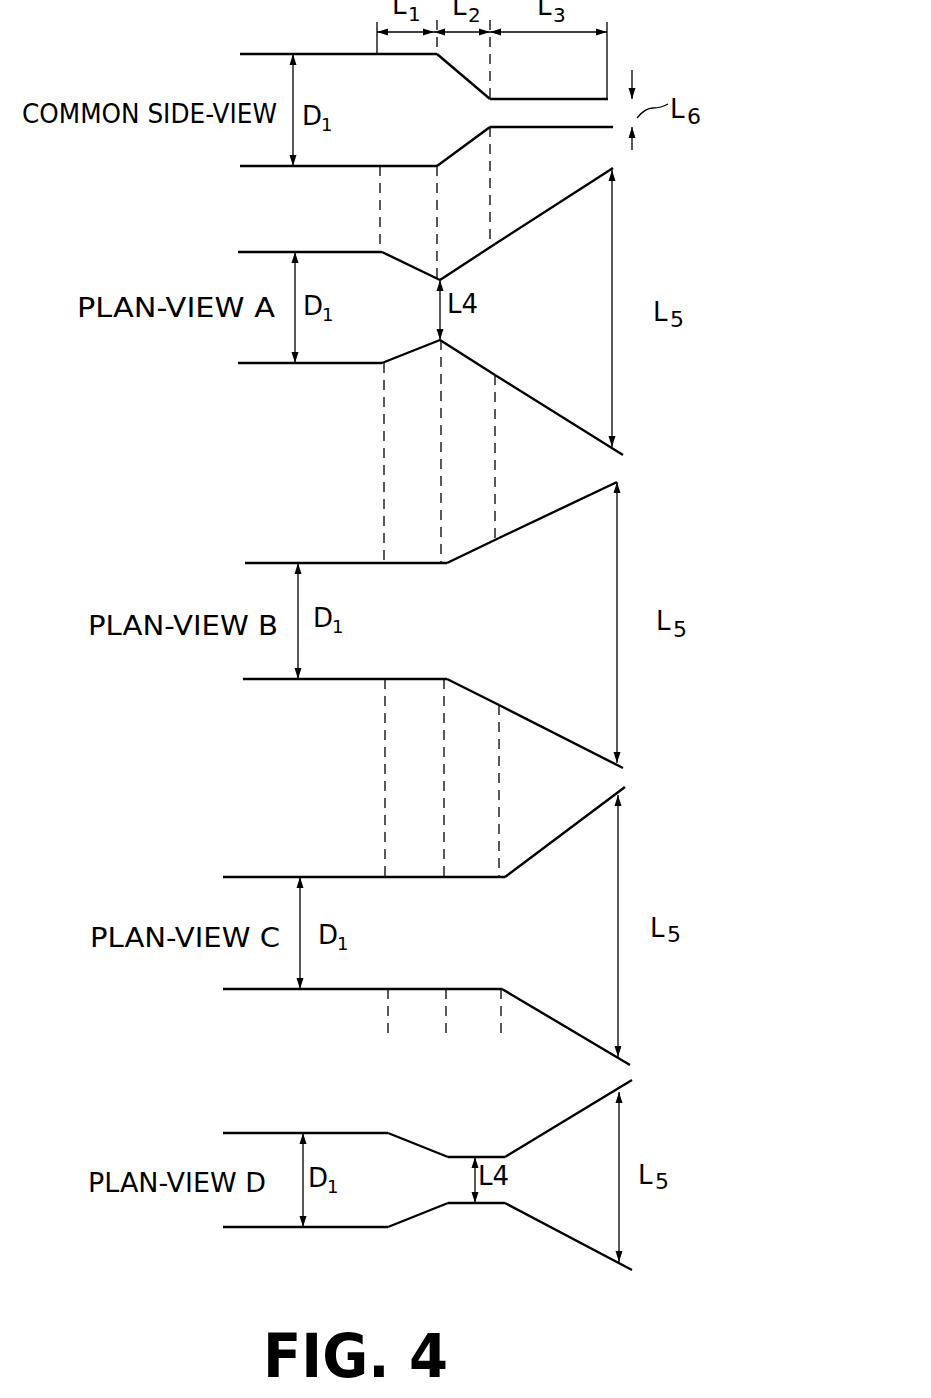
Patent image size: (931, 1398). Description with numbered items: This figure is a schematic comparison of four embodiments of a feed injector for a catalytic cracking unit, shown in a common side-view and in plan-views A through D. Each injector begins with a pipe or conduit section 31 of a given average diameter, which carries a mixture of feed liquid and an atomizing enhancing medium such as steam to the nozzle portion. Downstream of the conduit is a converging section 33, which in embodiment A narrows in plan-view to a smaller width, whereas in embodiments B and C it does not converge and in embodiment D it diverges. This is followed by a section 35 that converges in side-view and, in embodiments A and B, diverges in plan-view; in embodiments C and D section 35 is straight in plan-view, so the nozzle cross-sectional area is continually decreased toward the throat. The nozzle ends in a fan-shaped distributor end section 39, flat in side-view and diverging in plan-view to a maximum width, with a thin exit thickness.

The pipe or conduit section 31 is at (362, 168).
The converging section 33 is at (390, 170).
The simultaneously converging and diverging section 35 is at (452, 160).
The distributor end section 39 is at (575, 128).